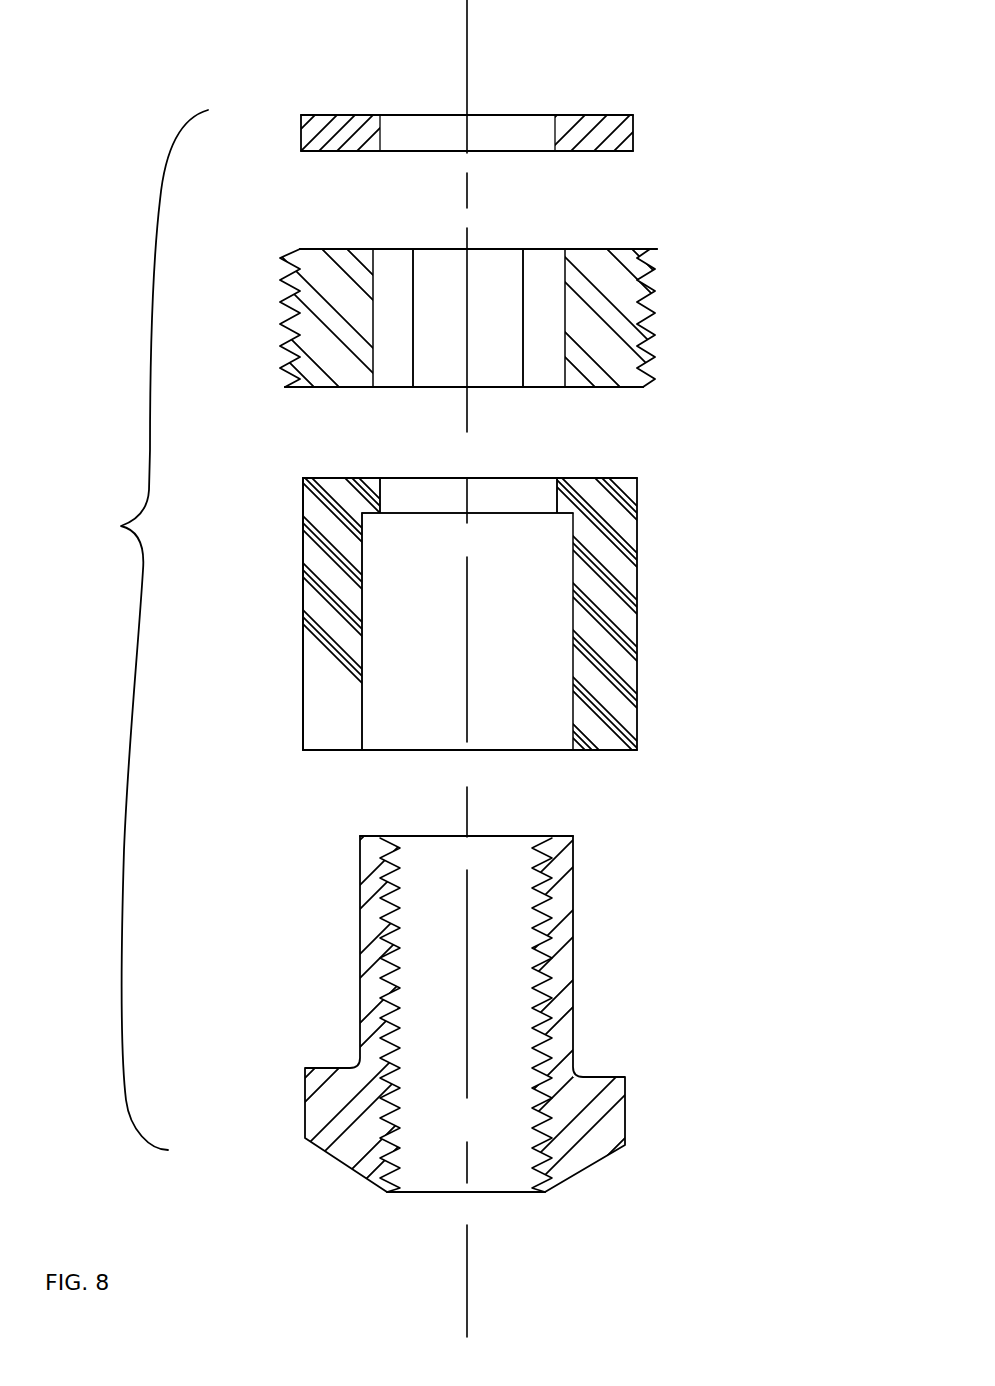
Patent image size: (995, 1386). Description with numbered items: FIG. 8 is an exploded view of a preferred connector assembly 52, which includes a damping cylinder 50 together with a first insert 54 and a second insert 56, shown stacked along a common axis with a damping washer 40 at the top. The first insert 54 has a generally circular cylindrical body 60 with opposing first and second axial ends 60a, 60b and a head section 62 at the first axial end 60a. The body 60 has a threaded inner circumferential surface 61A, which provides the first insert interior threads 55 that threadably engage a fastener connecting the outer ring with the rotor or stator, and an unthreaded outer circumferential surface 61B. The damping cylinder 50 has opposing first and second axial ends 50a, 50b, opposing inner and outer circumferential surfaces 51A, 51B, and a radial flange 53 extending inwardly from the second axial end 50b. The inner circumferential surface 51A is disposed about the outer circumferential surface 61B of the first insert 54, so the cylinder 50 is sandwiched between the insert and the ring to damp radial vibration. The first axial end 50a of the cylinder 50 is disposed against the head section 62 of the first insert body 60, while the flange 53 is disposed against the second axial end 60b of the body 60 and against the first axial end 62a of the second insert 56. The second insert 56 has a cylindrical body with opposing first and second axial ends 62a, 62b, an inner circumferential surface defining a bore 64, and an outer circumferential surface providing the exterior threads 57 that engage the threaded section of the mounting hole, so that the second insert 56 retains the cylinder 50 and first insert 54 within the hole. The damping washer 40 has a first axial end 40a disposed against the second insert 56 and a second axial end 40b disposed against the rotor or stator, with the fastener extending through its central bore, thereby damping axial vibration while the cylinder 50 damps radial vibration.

The damping washer 40 is at (642, 90).
The first axial end 40a is at (598, 152).
The second axial end 40b is at (362, 115).
The connector assembly 52 is at (126, 630).
The second insert 56 is at (514, 686).
The exterior threads 57 is at (652, 317).
The head section 62 is at (655, 263).
The first axial end 62a is at (640, 388).
The second axial end 62b is at (622, 249).
The threaded inner circumferential surface 61A is at (566, 352).
The unthreaded outer circumferential surface 61B is at (656, 371).
The bore 64 is at (436, 360).
The damping cylinder 50 is at (491, 543).
The first axial end 50a is at (350, 750).
The second axial end 50b is at (330, 478).
The inner circumferential surface 51A is at (363, 637).
The outer circumferential surface 51B is at (303, 645).
The radial flange 53 is at (377, 505).
The first insert 54 is at (513, 973).
The interior threads 55 is at (396, 960).
The cylindrical body 60 is at (481, 973).
The first axial end 60a is at (545, 1193).
The second axial end 60b is at (558, 838).